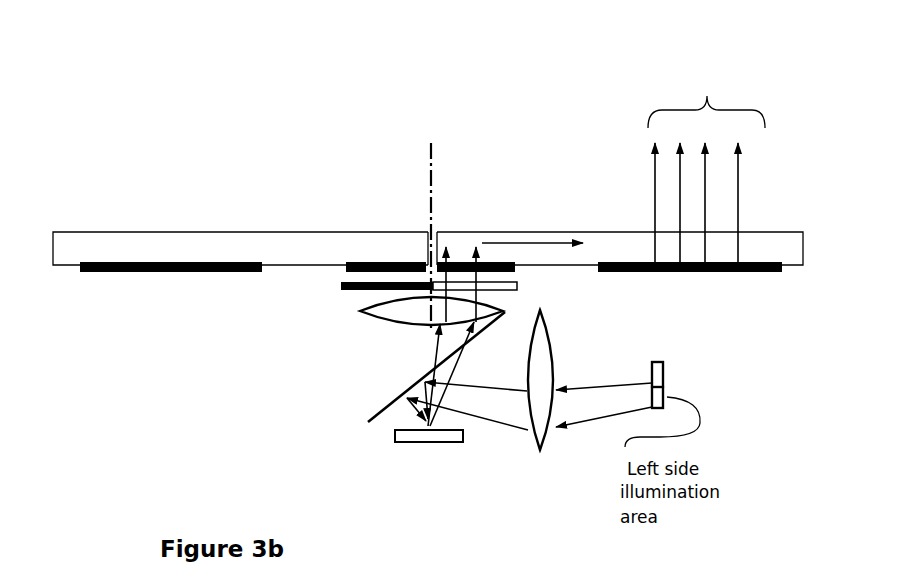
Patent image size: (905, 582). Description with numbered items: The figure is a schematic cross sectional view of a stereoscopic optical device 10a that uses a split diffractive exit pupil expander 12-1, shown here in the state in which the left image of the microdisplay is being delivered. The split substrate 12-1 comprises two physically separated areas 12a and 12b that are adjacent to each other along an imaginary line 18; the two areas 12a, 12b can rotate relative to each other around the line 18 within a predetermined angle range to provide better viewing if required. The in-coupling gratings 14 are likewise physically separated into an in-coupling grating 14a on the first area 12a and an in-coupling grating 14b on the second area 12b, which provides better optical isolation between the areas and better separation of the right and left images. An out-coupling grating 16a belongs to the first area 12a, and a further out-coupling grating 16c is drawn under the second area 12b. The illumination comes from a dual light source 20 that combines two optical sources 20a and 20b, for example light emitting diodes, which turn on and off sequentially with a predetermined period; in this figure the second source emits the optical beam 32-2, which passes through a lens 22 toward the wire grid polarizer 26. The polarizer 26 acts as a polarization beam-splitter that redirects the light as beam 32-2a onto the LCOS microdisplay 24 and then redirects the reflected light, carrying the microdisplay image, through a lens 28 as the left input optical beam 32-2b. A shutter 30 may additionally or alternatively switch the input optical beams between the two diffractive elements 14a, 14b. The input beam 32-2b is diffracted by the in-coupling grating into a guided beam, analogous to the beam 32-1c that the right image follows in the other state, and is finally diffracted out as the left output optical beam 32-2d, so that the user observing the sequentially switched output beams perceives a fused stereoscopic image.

The stereoscopic optical device 10a is at (415, 78).
The split exit pupil expander 12-1 is at (207, 229).
The first area 12a is at (120, 248).
The second area 12b is at (750, 250).
The in-coupling gratings 14 is at (366, 259).
The in-coupling grating 14a is at (390, 263).
The in-coupling grating 14b is at (495, 265).
The out-coupling grating 16a is at (123, 273).
The right reflective layer 16c is at (723, 273).
The line 18 is at (430, 188).
The dual light source 20 is at (665, 362).
The optical source 20a is at (657, 372).
The optical source 20b is at (663, 397).
The collimating lens 22 is at (535, 452).
The LCOS microdisplay 24 is at (417, 445).
The wire grid polarizer 26 is at (377, 417).
The input lens 28 is at (403, 322).
The shutter 30 is at (357, 290).
The diffracted optical beam 32-1c is at (542, 241).
The optical beam 32-2 is at (648, 407).
The reflected illumination beam 32-2a is at (407, 403).
The left input optical beam 32-2b is at (478, 276).
The left output optical beam 32-2d is at (652, 207).